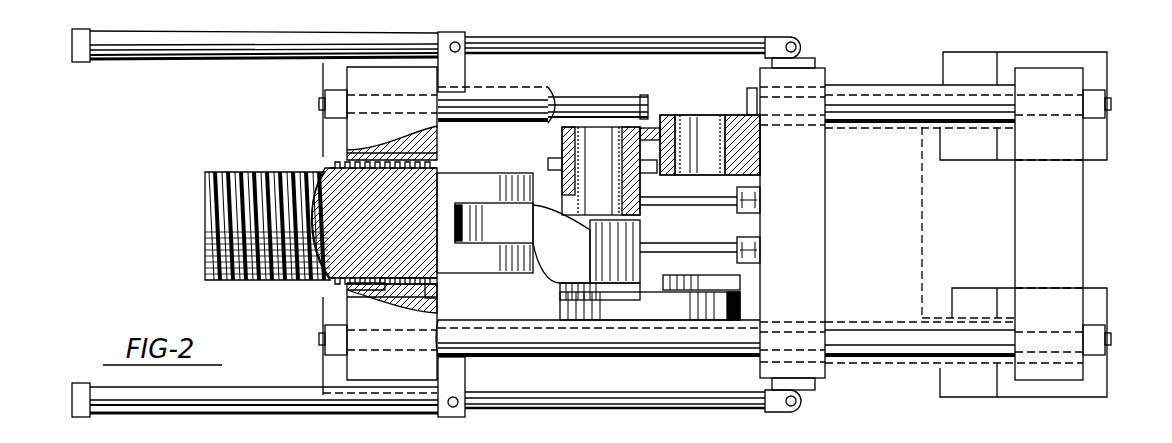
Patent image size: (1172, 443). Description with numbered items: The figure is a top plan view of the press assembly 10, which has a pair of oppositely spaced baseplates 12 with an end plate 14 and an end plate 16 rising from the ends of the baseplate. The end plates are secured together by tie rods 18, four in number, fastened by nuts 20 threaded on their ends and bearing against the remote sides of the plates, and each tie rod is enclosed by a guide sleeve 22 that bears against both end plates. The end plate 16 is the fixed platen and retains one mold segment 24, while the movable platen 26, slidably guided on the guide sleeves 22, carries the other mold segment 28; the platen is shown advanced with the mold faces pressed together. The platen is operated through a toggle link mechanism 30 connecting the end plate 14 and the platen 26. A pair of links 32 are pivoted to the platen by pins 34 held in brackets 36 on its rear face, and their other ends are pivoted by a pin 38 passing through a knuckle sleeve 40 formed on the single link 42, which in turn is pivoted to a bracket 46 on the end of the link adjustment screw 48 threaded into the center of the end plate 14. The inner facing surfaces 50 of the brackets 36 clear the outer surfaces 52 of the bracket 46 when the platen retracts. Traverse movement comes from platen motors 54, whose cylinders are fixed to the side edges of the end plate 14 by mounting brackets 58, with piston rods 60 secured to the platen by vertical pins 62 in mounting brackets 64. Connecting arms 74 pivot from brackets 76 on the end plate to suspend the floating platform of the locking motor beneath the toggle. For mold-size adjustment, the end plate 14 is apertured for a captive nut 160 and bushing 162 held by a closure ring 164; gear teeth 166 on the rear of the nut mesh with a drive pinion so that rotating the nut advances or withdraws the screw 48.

The press assembly 10 is at (853, 368).
The baseplate 12 is at (323, 77).
The end plate 14 is at (365, 367).
The end plate 16 is at (1082, 262).
The tie rod 18 is at (590, 100).
The nut 20 is at (325, 327).
The guide sleeve 22 is at (530, 95).
The mold segment 24 is at (960, 130).
The movable platen 26 is at (812, 310).
The mold segment 28 is at (845, 130).
The toggle link mechanism 30 is at (673, 97).
The link 32 is at (650, 127).
The pin 34 is at (700, 120).
The bracket 36 is at (750, 158).
The pin 38 is at (600, 147).
The knuckle sleeve 40 is at (640, 220).
The link 42 is at (555, 275).
The bracket 46 is at (453, 183).
The link adjustment screw 48 is at (312, 195).
The inner facing surface 50 is at (693, 177).
The outer surface 52 is at (478, 185).
The platen motor 54 is at (240, 58).
The mounting bracket 58 is at (467, 62).
The piston rod 60 is at (675, 42).
The vertical pin 62 is at (805, 405).
The mounting bracket 64 is at (797, 410).
The connecting arm 74 is at (707, 243).
The bracket 76 is at (760, 195).
The captive nut 160 is at (350, 150).
The bushing 162 is at (352, 293).
The closure ring 164 is at (437, 300).
The gear teeth 166 is at (335, 283).